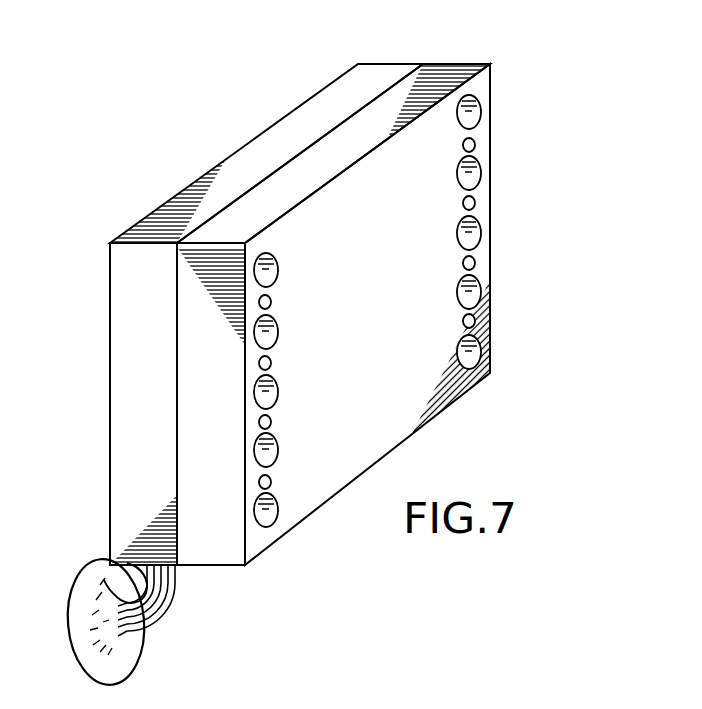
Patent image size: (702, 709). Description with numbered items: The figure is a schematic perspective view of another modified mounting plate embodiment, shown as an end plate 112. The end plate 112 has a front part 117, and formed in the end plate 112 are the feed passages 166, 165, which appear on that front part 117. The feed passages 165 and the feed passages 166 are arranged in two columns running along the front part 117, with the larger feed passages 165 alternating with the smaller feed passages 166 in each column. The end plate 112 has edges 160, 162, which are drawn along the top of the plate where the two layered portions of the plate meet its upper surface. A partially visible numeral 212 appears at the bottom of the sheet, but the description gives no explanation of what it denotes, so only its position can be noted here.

The optical connector module 112 is at (328, 353).
The first body portion 160 is at (387, 64).
The second body portion 162 is at (458, 64).
The mating face 117 is at (372, 392).
The fiber receiving openings 165 is at (480, 112).
The guide pin holes 166 is at (463, 321).
The connector (partial label) 212 is at (527, 701).